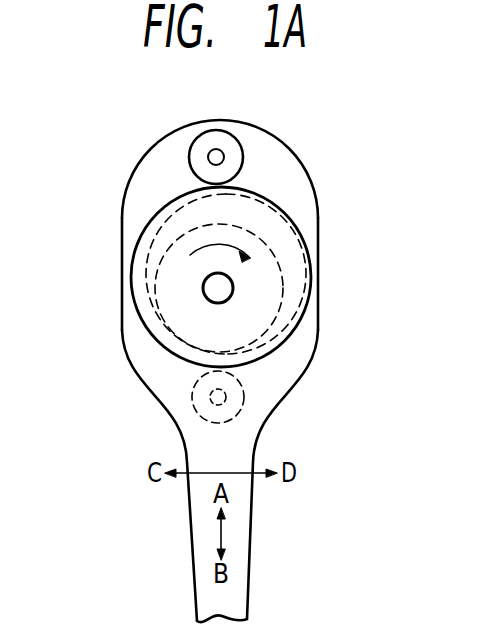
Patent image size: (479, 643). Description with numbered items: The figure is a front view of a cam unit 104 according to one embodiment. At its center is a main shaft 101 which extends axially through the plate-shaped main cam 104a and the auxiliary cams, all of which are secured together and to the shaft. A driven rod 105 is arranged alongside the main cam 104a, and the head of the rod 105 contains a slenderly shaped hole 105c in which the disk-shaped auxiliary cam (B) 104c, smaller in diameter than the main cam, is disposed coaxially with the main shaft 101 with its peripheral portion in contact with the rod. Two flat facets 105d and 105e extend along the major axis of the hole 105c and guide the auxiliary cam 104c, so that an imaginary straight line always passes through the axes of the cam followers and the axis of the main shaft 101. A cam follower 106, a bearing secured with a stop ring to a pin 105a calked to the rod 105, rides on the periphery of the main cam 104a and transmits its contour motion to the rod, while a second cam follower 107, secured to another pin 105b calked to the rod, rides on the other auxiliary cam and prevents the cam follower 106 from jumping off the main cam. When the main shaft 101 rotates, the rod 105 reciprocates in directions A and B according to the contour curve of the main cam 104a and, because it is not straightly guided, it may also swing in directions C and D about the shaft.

The main shaft 101 is at (204, 294).
The cam unit 104 is at (308, 372).
The main cam 104a is at (317, 333).
The auxiliary cam (B) 104c is at (310, 217).
The driven rod 105 is at (252, 553).
The pin 105a is at (215, 152).
The pin 105b is at (211, 396).
The slenderly shaped hole 105c is at (250, 207).
The flat facet 105d is at (322, 255).
The flat facet 105e is at (153, 258).
The cam follower 106 is at (235, 134).
The cam follower 107 is at (245, 402).